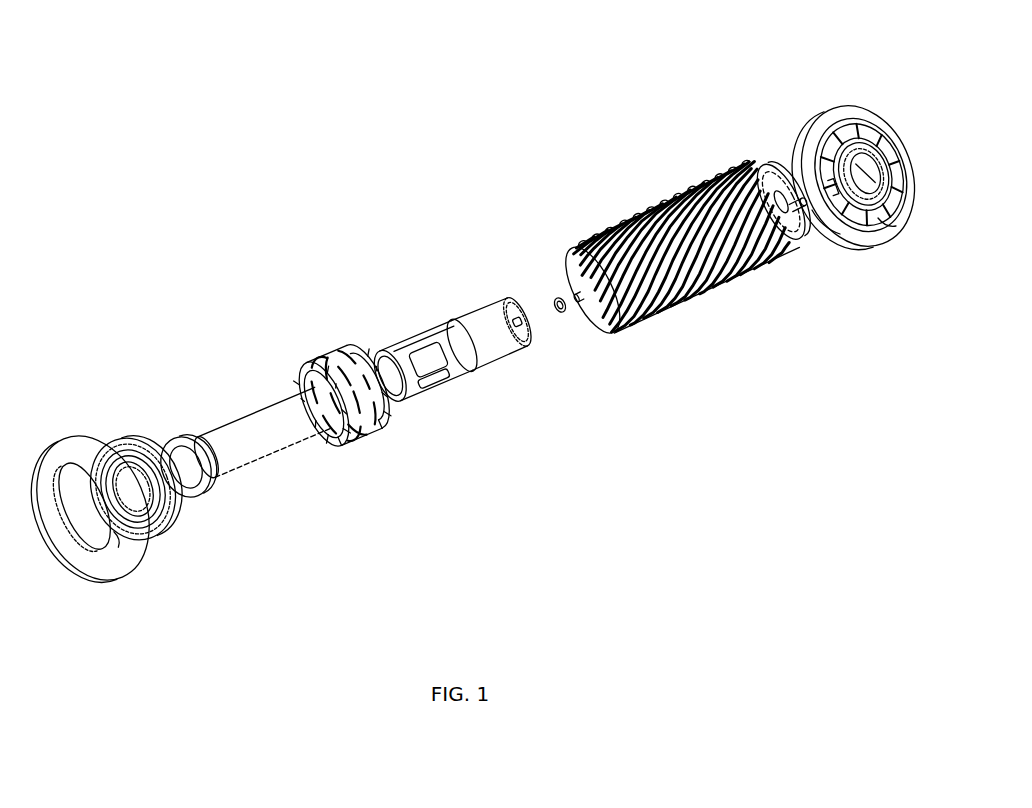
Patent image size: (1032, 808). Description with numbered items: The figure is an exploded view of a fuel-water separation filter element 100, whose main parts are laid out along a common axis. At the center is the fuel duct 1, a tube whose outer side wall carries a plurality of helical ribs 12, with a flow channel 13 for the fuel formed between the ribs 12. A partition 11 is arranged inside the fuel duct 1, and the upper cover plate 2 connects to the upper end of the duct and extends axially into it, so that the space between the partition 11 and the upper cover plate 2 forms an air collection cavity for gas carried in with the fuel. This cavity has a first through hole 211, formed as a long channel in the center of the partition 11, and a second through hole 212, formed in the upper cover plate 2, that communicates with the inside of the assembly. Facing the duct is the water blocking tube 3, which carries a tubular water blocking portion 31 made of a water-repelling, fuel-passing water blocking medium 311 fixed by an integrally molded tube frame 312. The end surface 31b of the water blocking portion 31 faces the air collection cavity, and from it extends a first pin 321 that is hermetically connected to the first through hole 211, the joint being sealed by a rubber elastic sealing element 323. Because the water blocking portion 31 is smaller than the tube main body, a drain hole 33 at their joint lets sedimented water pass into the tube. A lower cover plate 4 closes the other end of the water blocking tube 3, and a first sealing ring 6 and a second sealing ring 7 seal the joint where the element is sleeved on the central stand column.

The fuel-water separation filter element 100 is at (497, 60).
The fuel duct 1 is at (647, 372).
The partition 11 is at (787, 175).
The rib 12 is at (717, 287).
The flow channel 13 is at (667, 210).
The upper cover plate 2 is at (809, 144).
The first through hole 211 is at (827, 223).
The second through hole 212 is at (887, 228).
The water blocking tube 3 is at (381, 472).
The water blocking portion 31 is at (285, 297).
The water blocking medium 311 is at (267, 405).
The tube frame 312 is at (403, 340).
The end surface 31b is at (521, 332).
The first pin 321 is at (526, 300).
The elastic sealing element 323 is at (555, 297).
The drain hole 33 is at (402, 413).
The lower cover plate 4 is at (57, 447).
The first sealing ring 6 is at (108, 450).
The second sealing ring 7 is at (162, 447).